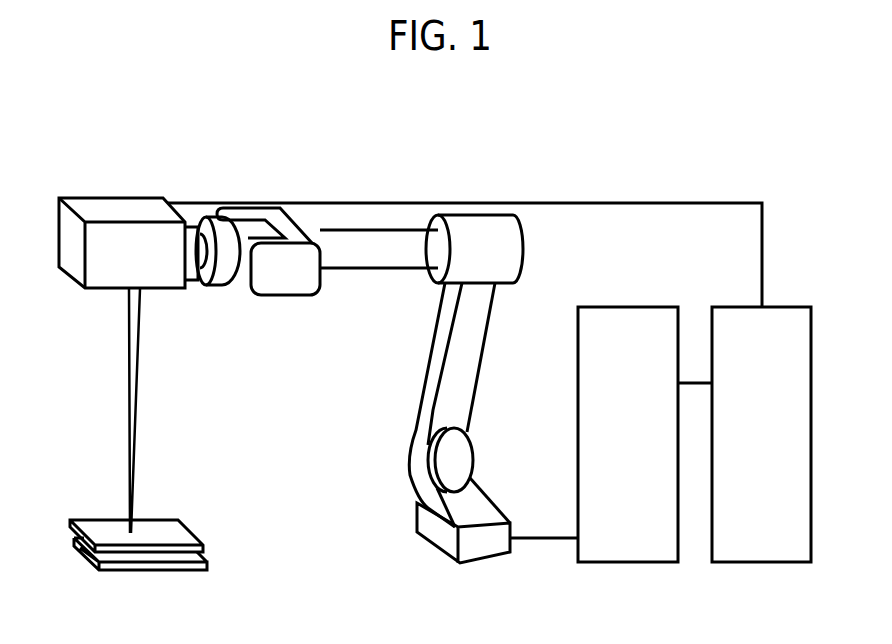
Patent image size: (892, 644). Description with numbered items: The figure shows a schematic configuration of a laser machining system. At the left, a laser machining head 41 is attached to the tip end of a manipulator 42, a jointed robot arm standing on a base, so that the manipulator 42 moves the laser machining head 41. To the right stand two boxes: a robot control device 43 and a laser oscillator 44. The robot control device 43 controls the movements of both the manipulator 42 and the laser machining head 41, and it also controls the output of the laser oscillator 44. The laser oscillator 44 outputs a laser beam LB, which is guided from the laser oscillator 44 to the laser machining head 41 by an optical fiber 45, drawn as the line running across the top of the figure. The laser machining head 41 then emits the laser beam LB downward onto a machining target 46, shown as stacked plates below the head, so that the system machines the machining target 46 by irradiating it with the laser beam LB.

The laser machining head 41 is at (122, 208).
The manipulator 42 is at (410, 378).
The robot control device 43 is at (637, 548).
The laser oscillator 44 is at (760, 548).
The optical fiber 45 is at (383, 200).
The machining target 46 is at (175, 577).
The laser beam LB is at (142, 383).